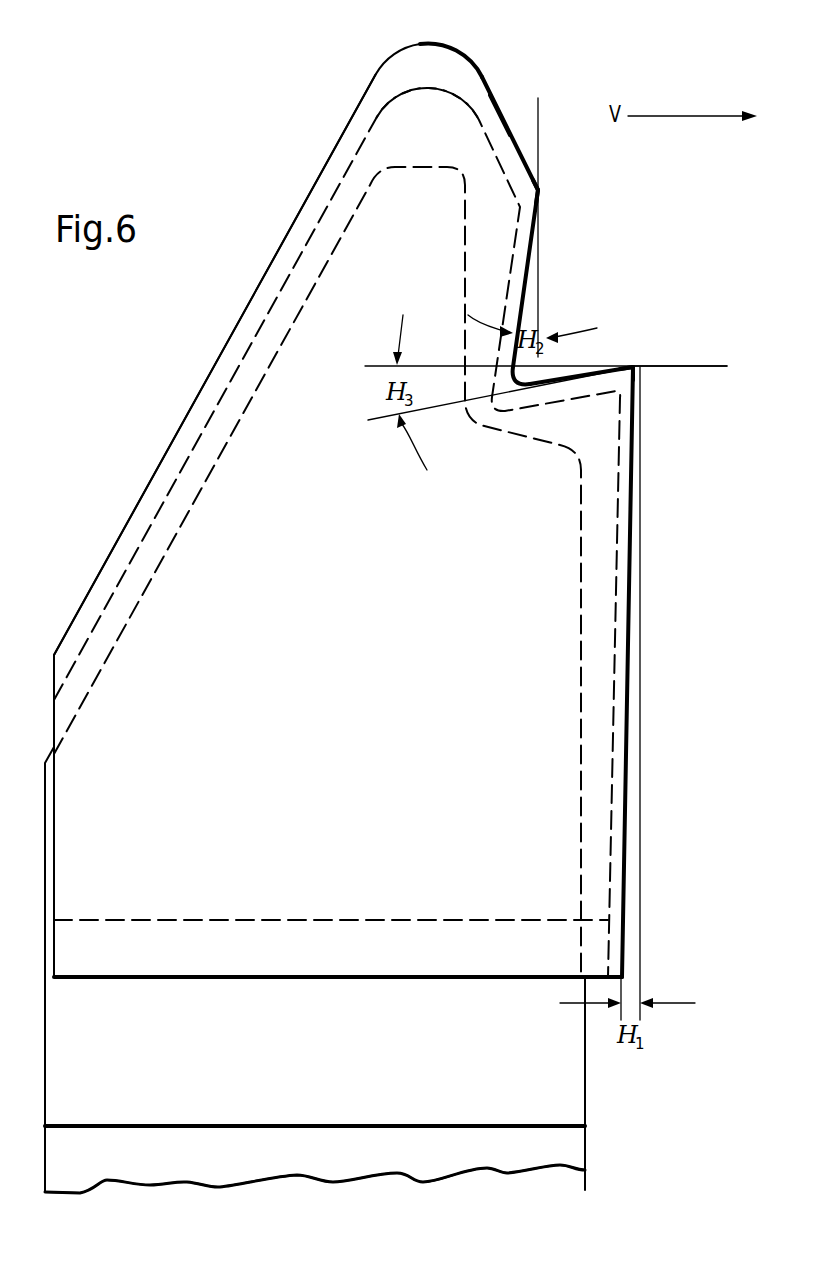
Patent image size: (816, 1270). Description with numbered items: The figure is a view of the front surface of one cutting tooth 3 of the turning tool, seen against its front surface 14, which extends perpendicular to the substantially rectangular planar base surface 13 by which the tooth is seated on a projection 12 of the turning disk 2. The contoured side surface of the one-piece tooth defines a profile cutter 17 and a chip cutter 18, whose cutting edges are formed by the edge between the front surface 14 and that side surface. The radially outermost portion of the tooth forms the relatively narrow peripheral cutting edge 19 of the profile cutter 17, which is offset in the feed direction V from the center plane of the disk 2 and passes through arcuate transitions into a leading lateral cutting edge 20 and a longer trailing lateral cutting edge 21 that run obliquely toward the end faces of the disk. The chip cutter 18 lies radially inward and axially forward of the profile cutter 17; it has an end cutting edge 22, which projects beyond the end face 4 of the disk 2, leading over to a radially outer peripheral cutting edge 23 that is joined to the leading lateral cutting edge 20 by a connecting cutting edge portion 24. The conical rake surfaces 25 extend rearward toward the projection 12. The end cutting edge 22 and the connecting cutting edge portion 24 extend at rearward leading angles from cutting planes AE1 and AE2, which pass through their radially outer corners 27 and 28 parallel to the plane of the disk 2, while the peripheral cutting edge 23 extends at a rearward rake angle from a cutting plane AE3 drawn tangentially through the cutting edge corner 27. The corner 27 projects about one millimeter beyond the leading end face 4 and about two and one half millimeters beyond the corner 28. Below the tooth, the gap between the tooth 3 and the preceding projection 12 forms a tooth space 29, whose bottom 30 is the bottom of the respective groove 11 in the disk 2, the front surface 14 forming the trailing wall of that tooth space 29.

The disk 2 is at (556, 1147).
The cutting tooth 3 is at (297, 173).
The end face 4 is at (585, 1071).
The groove 11 is at (518, 1097).
The projection 12 is at (267, 420).
The base surface 13 is at (365, 957).
The front surface 14 is at (365, 652).
The profile cutter 17 is at (474, 68).
The chip cutter 18 is at (657, 365).
The peripheral cutting edge 19 is at (420, 43).
The leading lateral cutting edge 20 is at (498, 110).
The trailing lateral cutting edge 21 is at (283, 240).
The end cutting edge 22 is at (630, 650).
The peripheral cutting edge 23 is at (585, 375).
The connecting cutting edge portion 24 is at (528, 255).
The rake surface 25 is at (440, 88).
The cutting edge corner 27 is at (633, 367).
The cutting edge corner 28 is at (540, 190).
The tooth space 29 is at (655, 1090).
The bottom 30 is at (178, 1126).
The cutting plane AE1 is at (642, 842).
The cutting plane AE2 is at (538, 120).
The cutting plane AE3 is at (710, 365).